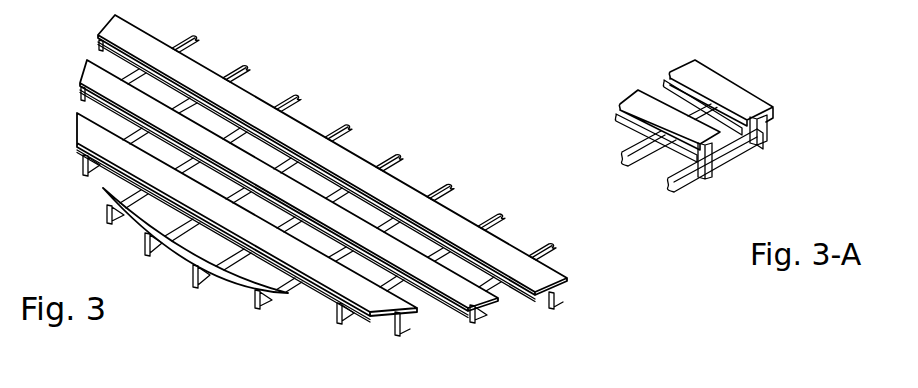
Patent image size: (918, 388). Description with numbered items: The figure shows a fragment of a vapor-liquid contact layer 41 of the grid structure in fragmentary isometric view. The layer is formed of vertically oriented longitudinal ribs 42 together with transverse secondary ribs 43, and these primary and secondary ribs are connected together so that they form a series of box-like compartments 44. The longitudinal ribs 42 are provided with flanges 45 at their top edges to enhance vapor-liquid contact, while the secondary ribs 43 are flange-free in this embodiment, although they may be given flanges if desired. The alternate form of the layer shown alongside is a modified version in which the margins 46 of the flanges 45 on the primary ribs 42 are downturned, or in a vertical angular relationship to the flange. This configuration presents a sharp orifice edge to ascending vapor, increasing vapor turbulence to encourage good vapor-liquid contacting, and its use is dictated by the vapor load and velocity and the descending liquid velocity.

In FIG. 3, the vapor-liquid contact layer 41 is at (363, 325).
In FIG. 3, the longitudinal ribs 42 is at (390, 328).
In FIG. 3-A, the longitudinal ribs 42 is at (708, 180).
In FIG. 3, the transverse secondary ribs 43 is at (262, 100).
In FIG. 3-A, the transverse secondary ribs 43 is at (633, 160).
In FIG. 3, the box-like compartments 44 is at (155, 85).
In FIG. 3, the flanges 45 is at (500, 253).
In FIG. 3-A, the flanges 45 is at (675, 68).
In FIG. 3-A, the margins 46 is at (662, 80).